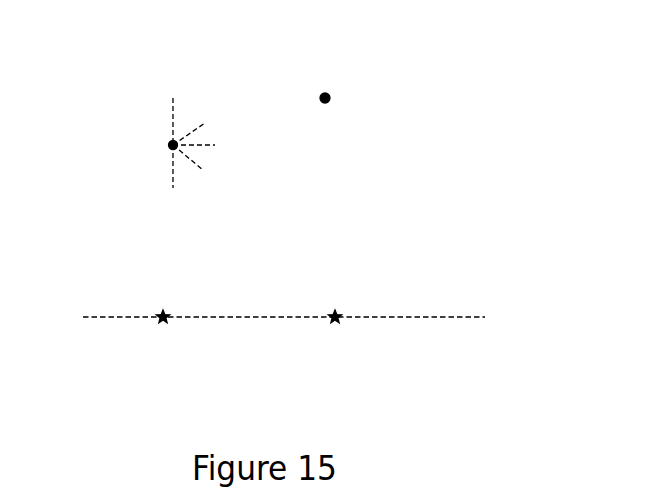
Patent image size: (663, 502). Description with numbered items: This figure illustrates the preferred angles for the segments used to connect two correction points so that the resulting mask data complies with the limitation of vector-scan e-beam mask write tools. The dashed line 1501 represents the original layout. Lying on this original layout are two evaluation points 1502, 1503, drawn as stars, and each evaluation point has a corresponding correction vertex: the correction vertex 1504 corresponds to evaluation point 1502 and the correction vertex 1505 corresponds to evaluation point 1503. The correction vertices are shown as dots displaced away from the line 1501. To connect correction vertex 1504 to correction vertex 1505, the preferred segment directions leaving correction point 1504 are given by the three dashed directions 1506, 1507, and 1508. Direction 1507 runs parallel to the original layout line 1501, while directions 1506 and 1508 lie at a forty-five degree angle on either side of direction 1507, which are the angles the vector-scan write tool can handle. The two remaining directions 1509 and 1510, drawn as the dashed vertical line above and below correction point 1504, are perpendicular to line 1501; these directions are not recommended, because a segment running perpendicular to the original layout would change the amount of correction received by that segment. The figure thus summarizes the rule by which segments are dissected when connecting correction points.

The line 1501 is at (500, 323).
The evaluation point 1502 is at (165, 336).
The evaluation point 1503 is at (338, 336).
The correction vertex 1504 is at (150, 140).
The correction vertex 1505 is at (341, 83).
The segment direction 1506 is at (203, 114).
The segment direction 1507 is at (222, 156).
The segment direction 1508 is at (203, 178).
The direction 1509 is at (162, 108).
The direction 1510 is at (162, 184).